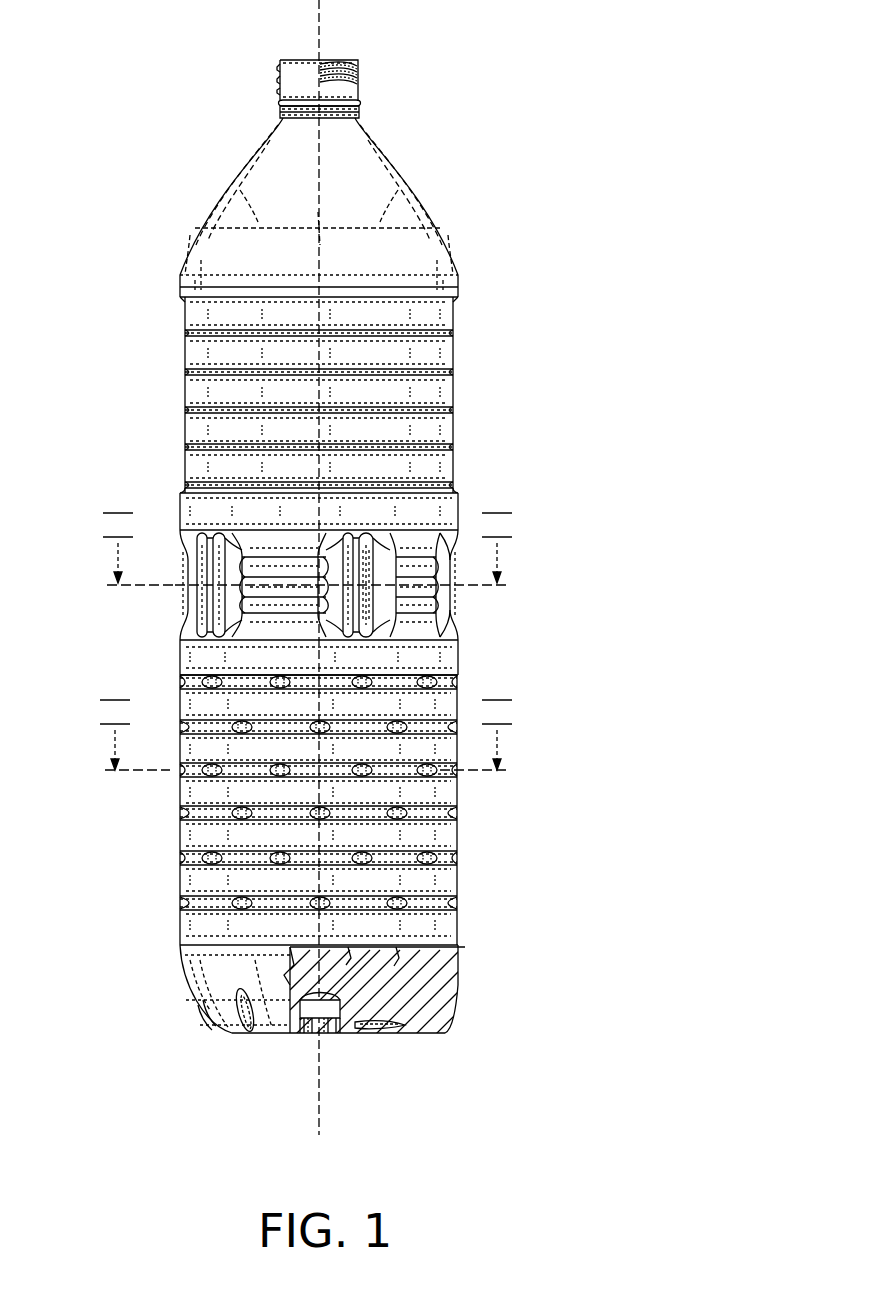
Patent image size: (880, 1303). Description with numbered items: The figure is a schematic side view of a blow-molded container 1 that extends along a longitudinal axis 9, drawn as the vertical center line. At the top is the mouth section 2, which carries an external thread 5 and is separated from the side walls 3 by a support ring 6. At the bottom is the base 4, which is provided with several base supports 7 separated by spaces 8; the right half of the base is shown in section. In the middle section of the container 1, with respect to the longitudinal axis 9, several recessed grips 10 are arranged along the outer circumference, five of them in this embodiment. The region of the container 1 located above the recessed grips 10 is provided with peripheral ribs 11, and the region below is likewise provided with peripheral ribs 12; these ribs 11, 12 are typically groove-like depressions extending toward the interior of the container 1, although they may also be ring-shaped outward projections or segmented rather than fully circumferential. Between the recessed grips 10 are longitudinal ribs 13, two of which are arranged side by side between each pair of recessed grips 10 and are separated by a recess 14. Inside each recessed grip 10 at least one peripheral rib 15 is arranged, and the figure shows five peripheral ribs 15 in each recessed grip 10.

The blow-molded container 1 is at (492, 112).
The mouth section 2 is at (300, 68).
The side walls 3 is at (462, 393).
The base 4 is at (410, 1010).
The external thread 5 is at (358, 82).
The support ring 6 is at (277, 100).
The base supports 7 is at (230, 1035).
The spaces 8 is at (255, 1035).
The longitudinal axis 9 is at (320, 250).
The recessed grips 10 is at (195, 608).
The peripheral ribs 11 is at (185, 372).
The peripheral ribs 12 is at (180, 812).
The longitudinal ribs 13 is at (345, 532).
The recess 14 is at (368, 545).
The peripheral rib 15 is at (446, 608).